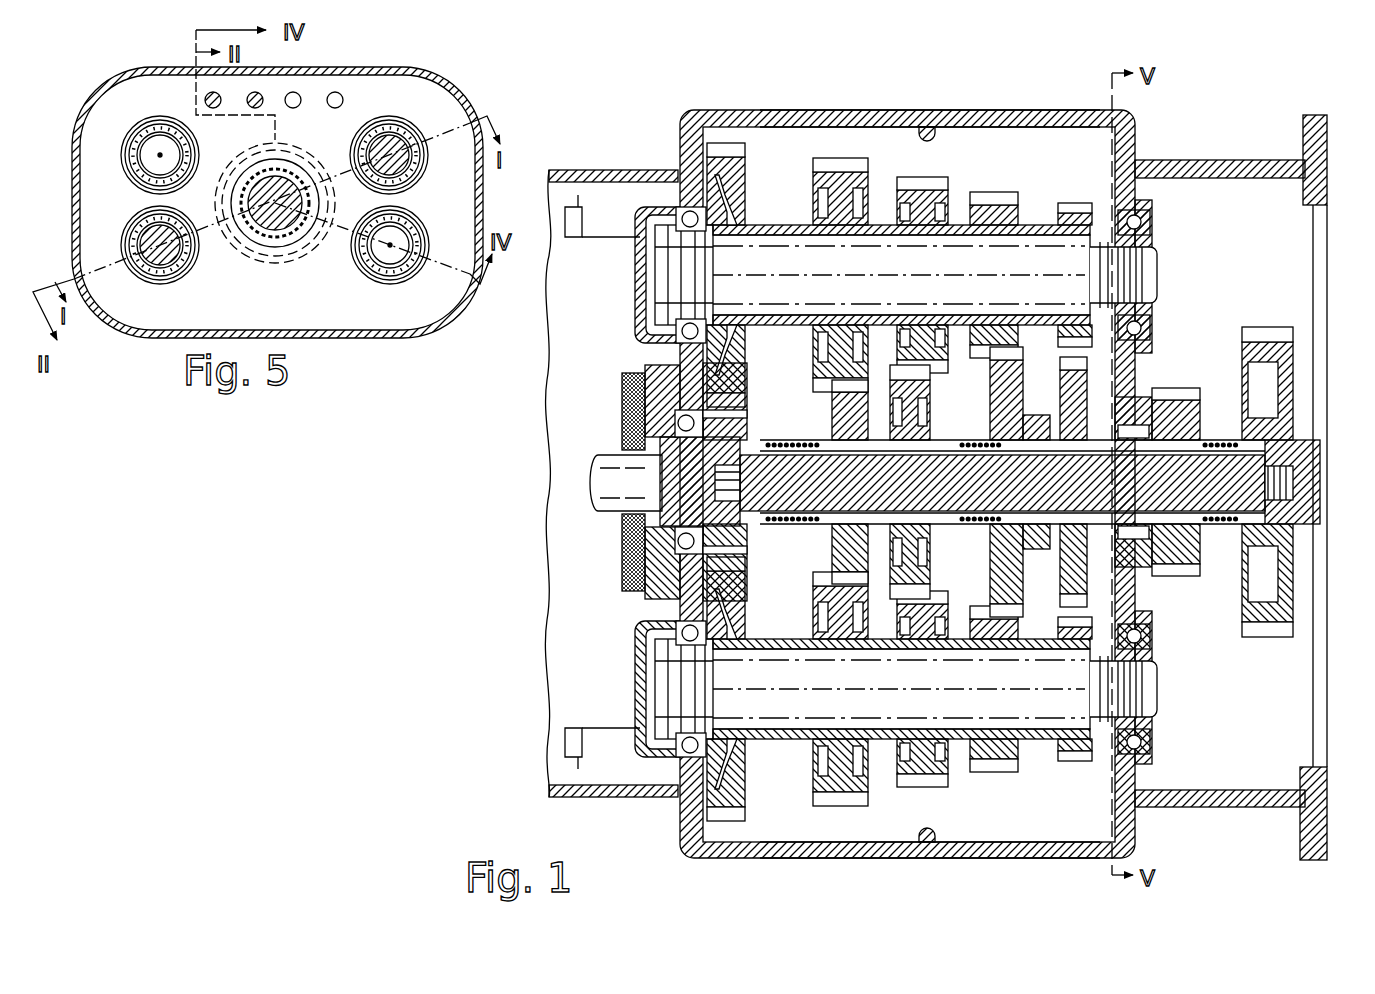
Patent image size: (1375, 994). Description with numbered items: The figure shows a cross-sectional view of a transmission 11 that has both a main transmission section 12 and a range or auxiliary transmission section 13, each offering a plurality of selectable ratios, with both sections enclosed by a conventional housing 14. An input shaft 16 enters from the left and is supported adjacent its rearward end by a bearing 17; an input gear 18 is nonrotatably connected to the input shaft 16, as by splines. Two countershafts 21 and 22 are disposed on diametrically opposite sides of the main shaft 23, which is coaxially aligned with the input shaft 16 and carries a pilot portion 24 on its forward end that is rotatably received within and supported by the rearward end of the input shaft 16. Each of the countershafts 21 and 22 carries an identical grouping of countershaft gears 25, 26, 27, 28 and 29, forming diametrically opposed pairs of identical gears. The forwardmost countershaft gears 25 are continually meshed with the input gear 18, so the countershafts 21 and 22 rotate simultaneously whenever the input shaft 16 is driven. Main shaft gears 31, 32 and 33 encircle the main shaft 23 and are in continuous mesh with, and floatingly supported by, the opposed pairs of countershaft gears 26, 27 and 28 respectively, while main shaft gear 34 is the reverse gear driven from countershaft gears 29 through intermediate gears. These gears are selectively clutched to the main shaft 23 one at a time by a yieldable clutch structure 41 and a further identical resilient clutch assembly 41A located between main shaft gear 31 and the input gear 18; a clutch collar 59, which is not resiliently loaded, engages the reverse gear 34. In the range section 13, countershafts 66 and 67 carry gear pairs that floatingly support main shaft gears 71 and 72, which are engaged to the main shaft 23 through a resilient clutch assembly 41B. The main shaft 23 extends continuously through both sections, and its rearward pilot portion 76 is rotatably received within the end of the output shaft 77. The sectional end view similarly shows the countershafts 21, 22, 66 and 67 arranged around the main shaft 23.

In FIG. 1, the transmission 11 is at (988, 100).
In FIG. 1, the main transmission section 12 is at (848, 105).
In FIG. 1, the range transmission section 13 is at (1232, 160).
In FIG. 1, the housing 14 is at (775, 858).
In FIG. 1, the input shaft 16 is at (622, 500).
In FIG. 1, the bearing 17 is at (645, 432).
In FIG. 1, the input gear 18 is at (746, 440).
In FIG. 5, the countershaft 21 is at (392, 145).
In FIG. 1, the countershaft 21 is at (1085, 285).
In FIG. 5, the countershaft 22 is at (170, 266).
In FIG. 1, the countershaft 22 is at (1080, 693).
In FIG. 5, the main shaft 23 is at (280, 212).
In FIG. 1, the main shaft 23 is at (786, 498).
In FIG. 1, the pilot portion 24 is at (628, 520).
In FIG. 1, the countershaft gear 25 is at (728, 170).
In FIG. 1, the countershaft gear 26 is at (850, 185).
In FIG. 1, the countershaft gear 27 is at (930, 190).
In FIG. 1, the countershaft gear 28 is at (993, 215).
In FIG. 1, the countershaft gear 29 is at (1078, 225).
In FIG. 1, the main shaft gear 31 is at (838, 410).
In FIG. 1, the main shaft gear 32 is at (915, 390).
In FIG. 1, the main shaft gear 33 is at (1020, 385).
In FIG. 1, the main shaft gear 34 is at (1078, 390).
In FIG. 1, the yieldable clutch structure 41 is at (957, 535).
In FIG. 1, the resilient clutch assembly 41A is at (803, 530).
In FIG. 1, the resilient clutch assembly 41B is at (1200, 430).
In FIG. 1, the clutch collar 59 is at (1098, 448).
In FIG. 5, the countershaft 66 is at (388, 268).
In FIG. 5, the countershaft 67 is at (160, 155).
In FIG. 1, the main shaft gear 71 is at (1172, 408).
In FIG. 1, the main shaft gear 72 is at (1285, 350).
In FIG. 1, the pilot portion 76 is at (1275, 490).
In FIG. 1, the output shaft 77 is at (1300, 520).